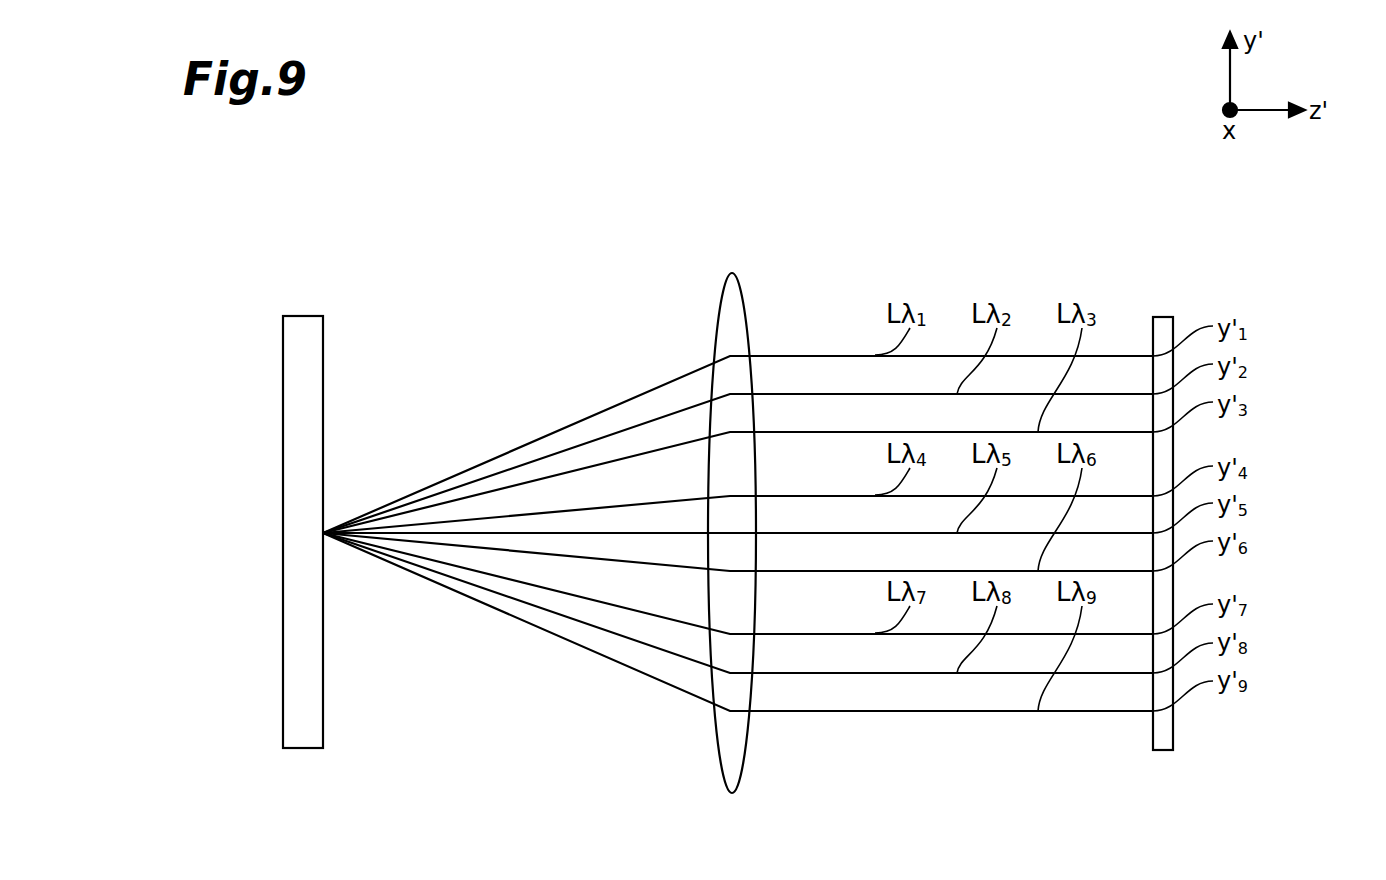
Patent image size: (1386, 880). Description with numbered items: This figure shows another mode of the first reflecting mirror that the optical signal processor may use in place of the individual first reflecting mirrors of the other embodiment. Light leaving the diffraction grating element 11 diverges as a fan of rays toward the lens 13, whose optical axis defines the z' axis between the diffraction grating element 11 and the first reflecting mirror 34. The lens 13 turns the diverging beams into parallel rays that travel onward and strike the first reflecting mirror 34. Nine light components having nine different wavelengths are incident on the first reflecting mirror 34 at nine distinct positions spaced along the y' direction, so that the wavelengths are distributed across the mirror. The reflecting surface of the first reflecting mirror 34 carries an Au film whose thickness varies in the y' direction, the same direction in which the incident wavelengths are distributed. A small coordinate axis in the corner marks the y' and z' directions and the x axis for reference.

The diffraction grating element 11 is at (303, 316).
The lens 13 is at (733, 273).
The first reflecting mirror 34 is at (1163, 750).